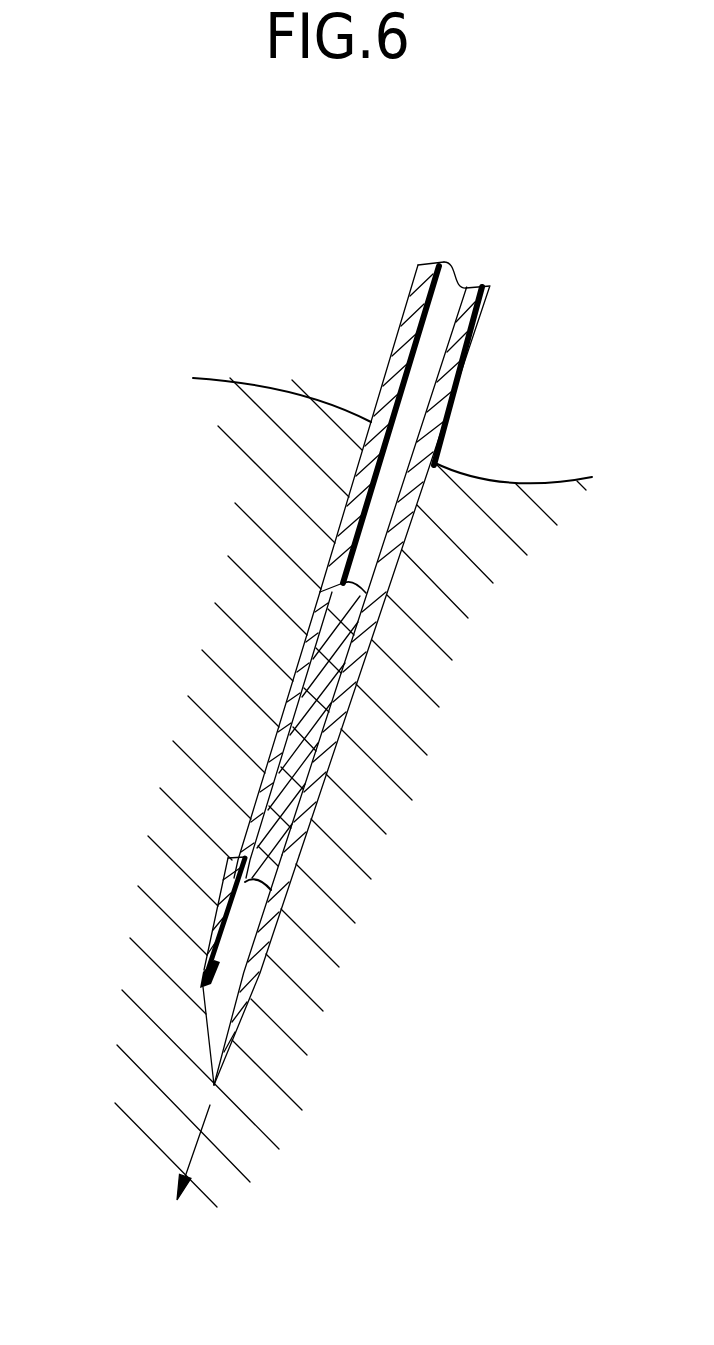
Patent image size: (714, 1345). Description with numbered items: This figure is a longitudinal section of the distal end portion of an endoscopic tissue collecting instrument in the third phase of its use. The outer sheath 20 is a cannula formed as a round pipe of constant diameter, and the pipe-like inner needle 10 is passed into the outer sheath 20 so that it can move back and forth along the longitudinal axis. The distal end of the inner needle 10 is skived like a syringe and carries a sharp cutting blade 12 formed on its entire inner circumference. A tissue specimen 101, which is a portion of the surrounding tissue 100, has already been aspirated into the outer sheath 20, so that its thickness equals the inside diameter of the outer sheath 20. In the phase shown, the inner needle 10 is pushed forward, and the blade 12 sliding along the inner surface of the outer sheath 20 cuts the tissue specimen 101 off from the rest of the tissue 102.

The inner needle 10 is at (241, 970).
The cutting blade 12 is at (203, 987).
The outer sheath 20 is at (449, 405).
The tissue 100 is at (308, 577).
The tissue specimen 101 is at (313, 752).
The rest of the tissue 102 is at (270, 727).